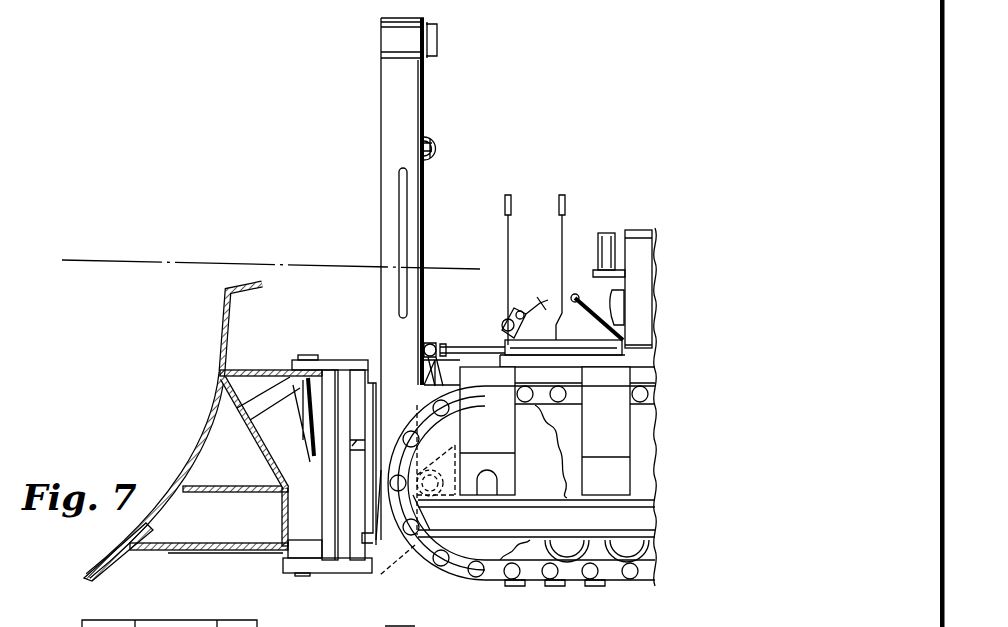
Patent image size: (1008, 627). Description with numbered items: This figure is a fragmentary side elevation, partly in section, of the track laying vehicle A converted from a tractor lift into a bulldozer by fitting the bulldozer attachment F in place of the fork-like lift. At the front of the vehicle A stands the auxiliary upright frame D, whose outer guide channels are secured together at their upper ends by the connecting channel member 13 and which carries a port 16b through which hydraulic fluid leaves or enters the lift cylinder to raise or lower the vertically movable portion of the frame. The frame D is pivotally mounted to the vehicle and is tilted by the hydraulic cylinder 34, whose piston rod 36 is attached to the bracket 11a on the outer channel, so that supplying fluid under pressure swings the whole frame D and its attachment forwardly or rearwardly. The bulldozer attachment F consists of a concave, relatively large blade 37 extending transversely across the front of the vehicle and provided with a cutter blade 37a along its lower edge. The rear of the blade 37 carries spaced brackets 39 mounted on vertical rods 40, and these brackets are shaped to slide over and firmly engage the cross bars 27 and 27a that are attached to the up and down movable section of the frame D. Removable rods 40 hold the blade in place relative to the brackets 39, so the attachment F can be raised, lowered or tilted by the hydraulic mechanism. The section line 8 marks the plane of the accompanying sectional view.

The connecting channel member 13 is at (437, 45).
The auxiliary upright frame D is at (426, 94).
The port 16b is at (430, 146).
The section line 8 is at (82, 258).
The vehicle A is at (656, 270).
The bracket 11a is at (432, 344).
The piston rod 36 is at (478, 350).
The hydraulic cylinder 34 is at (606, 349).
The blade 37 is at (222, 378).
The bracket 39 is at (268, 370).
The cross bar 27 is at (358, 368).
The vertical rod 40 is at (303, 422).
The bulldozer attachment F is at (205, 438).
The cutter blade 37a is at (118, 552).
The cross bar 27a is at (375, 542).